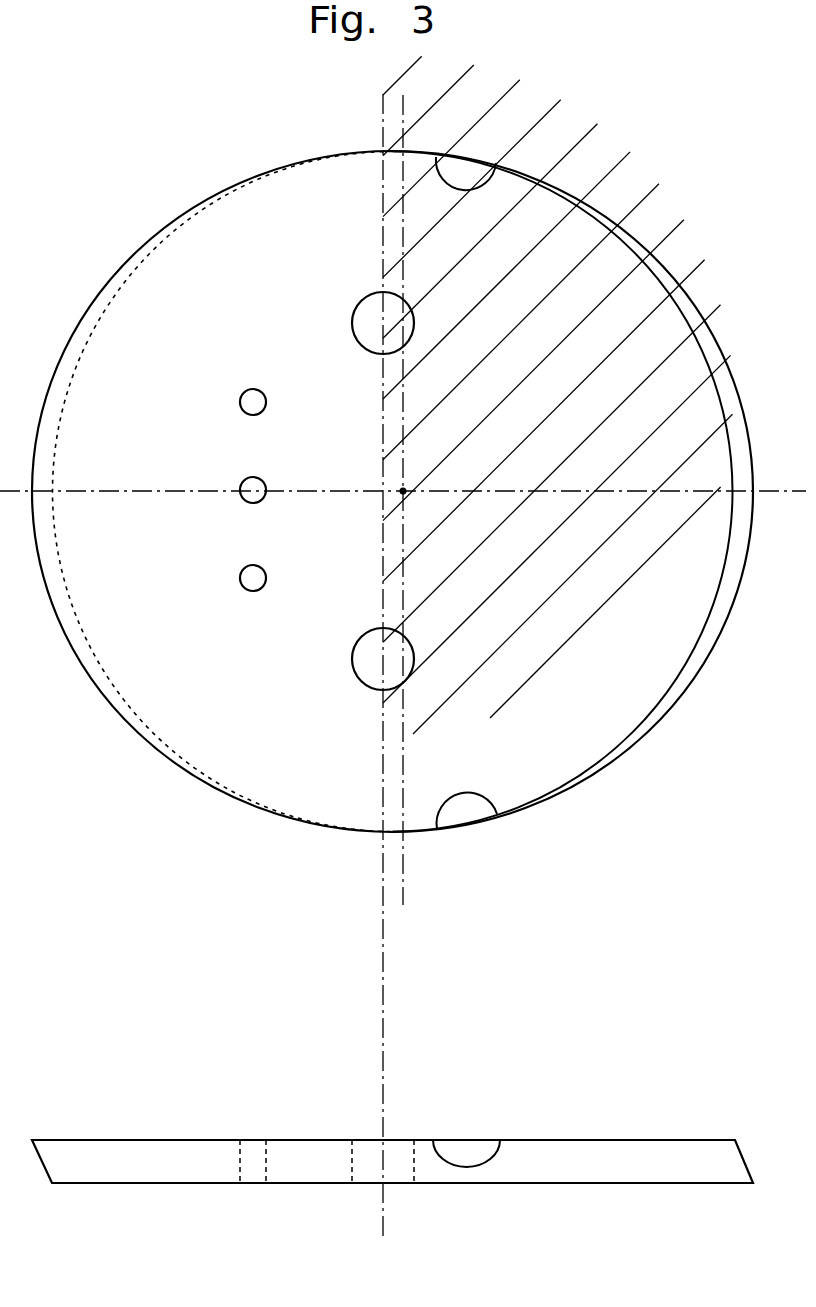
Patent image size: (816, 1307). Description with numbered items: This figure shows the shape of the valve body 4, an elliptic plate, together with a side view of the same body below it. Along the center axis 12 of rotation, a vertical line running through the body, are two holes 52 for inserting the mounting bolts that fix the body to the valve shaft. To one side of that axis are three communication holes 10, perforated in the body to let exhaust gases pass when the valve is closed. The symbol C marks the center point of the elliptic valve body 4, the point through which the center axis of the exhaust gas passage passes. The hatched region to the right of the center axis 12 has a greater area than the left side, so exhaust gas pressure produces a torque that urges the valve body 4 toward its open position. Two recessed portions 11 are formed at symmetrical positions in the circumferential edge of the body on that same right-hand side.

The valve body 4 is at (630, 698).
The center axis of rotation 12 is at (381, 100).
The recessed portions 11 is at (478, 172).
The holes 52 is at (362, 295).
The communication holes 10 is at (253, 388).
The center point C is at (410, 488).